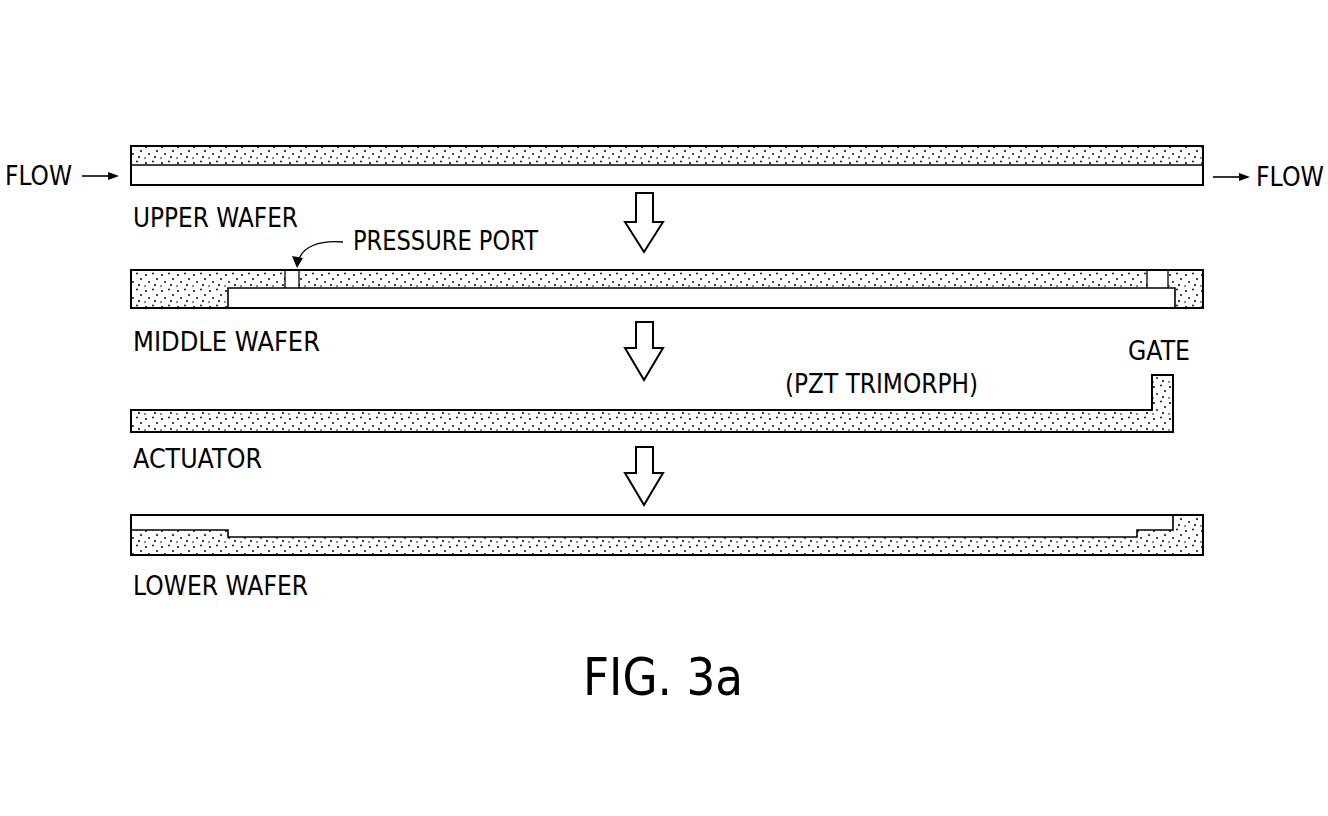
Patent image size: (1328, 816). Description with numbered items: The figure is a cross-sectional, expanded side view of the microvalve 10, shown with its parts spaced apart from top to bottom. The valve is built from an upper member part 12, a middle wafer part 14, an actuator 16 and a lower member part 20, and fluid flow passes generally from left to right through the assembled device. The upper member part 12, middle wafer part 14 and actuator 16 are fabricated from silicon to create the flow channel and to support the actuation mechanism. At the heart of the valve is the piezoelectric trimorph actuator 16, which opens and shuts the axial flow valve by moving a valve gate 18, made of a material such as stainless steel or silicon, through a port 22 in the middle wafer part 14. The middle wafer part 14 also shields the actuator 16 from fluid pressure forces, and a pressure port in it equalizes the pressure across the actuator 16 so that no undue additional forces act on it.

The microvalve 10 is at (695, 338).
The upper member part 12 is at (1203, 155).
The middle wafer part 14 is at (1203, 290).
The actuator 16 is at (1170, 432).
The valve gate 18 is at (1175, 383).
The lower member part 20 is at (1173, 557).
The port 22 is at (1160, 268).